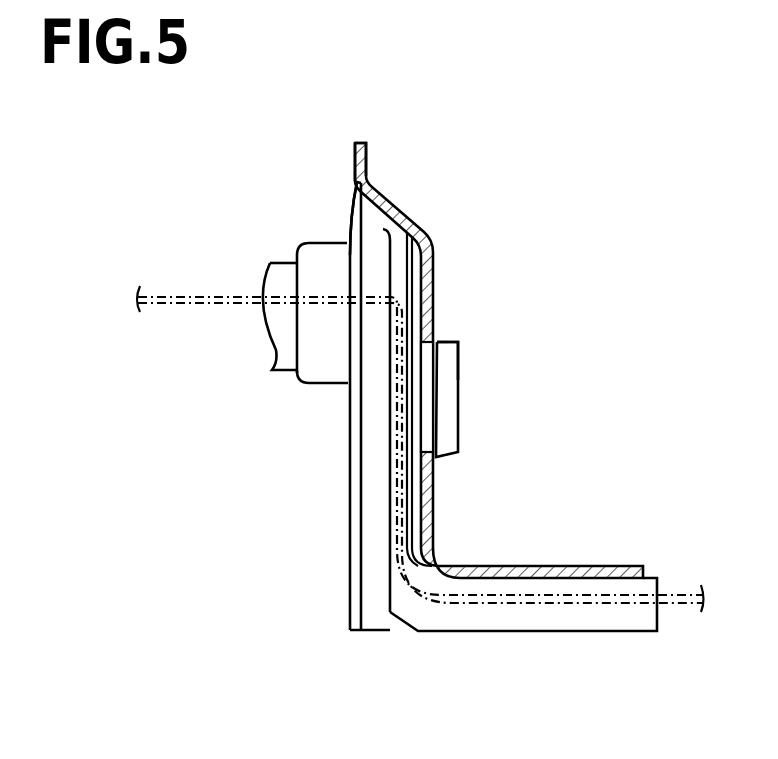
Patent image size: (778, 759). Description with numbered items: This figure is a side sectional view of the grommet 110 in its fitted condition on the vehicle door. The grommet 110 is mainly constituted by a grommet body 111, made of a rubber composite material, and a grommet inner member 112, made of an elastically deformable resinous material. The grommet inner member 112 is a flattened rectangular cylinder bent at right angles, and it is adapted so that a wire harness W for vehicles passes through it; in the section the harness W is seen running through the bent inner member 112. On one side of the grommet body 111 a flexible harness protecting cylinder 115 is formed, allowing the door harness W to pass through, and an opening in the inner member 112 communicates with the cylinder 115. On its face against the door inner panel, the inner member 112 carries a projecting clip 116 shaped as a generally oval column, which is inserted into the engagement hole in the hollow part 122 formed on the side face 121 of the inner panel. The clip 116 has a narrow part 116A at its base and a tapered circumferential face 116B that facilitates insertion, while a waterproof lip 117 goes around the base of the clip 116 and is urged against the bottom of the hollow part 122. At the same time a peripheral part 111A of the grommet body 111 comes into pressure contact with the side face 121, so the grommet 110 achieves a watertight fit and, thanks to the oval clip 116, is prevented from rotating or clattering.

The grommet 110 is at (290, 231).
The grommet body 111 is at (436, 377).
The peripheral part 111A is at (352, 189).
The grommet inner member 112 is at (407, 514).
The harness protecting cylinder 115 is at (290, 370).
The clip 116 is at (534, 346).
The narrow part 116A is at (441, 340).
The tapered circumferential face 116B is at (461, 340).
The waterproof lip 117 is at (428, 332).
The side face 121 is at (355, 160).
The hollow part 122 is at (450, 331).
The wire harness W is at (193, 303).